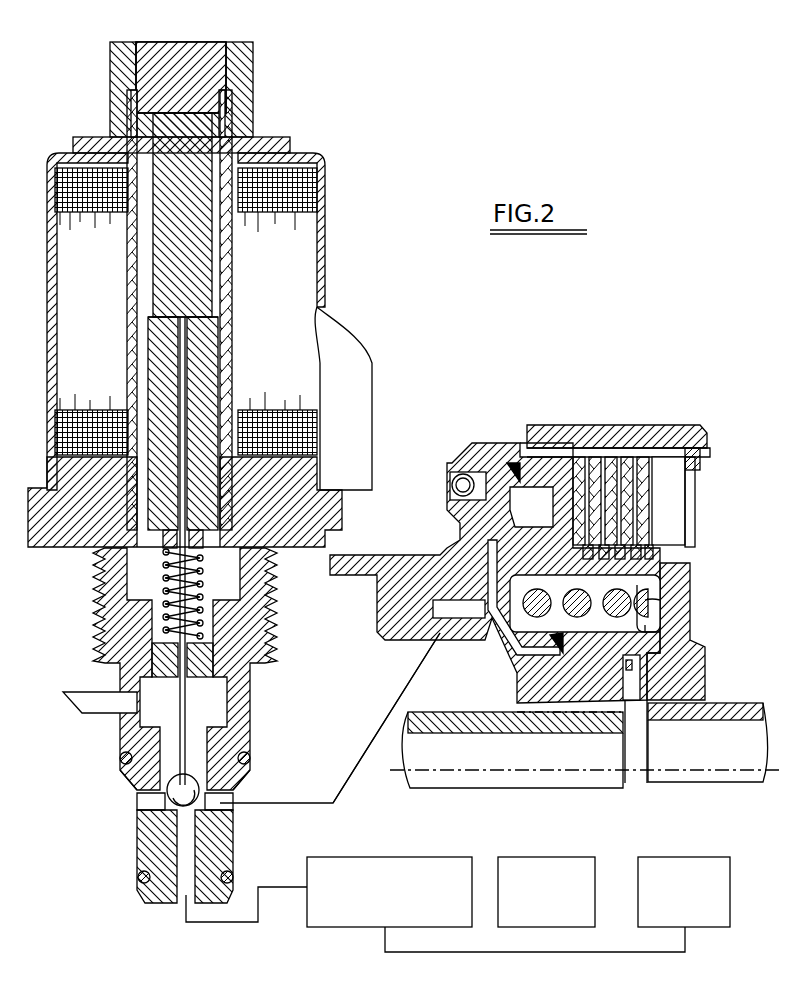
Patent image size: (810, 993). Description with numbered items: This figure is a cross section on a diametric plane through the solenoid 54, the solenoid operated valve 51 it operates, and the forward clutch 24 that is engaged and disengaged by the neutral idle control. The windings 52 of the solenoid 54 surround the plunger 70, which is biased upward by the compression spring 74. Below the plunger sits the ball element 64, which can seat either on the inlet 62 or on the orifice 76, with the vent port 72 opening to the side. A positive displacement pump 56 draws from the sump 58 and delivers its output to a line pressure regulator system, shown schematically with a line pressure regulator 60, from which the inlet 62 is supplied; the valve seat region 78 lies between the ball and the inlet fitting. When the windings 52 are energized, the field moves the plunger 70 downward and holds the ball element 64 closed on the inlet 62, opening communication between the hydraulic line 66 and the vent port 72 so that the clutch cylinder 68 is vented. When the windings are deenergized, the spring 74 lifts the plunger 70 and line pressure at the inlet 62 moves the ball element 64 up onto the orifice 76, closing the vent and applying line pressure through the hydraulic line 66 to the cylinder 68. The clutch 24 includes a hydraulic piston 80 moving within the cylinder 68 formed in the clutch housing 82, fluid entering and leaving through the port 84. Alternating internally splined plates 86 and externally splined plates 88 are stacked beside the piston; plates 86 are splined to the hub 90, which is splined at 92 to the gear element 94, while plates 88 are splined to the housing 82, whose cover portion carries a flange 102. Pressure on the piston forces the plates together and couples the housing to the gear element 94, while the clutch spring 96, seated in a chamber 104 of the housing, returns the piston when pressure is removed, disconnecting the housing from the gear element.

The forward clutch 24 is at (575, 412).
The solenoid operated valve 51 is at (115, 772).
The windings 52 is at (305, 193).
The solenoid 54 is at (283, 110).
The positive displacement pump 56 is at (546, 856).
The sump 58 is at (695, 856).
The line pressure regulator 60 is at (390, 856).
The inlet 62 is at (183, 838).
The ball element 64 is at (167, 800).
The hydraulic line 66 is at (383, 722).
The clutch cylinder 68 is at (470, 548).
The plunger 70 is at (182, 390).
The vent port 72 is at (93, 692).
The compression spring 74 is at (170, 567).
The orifice 76 is at (197, 767).
The valve seat 78 is at (220, 803).
The hydraulic piston 80 is at (515, 465).
The clutch housing 82 is at (668, 432).
The port 84 is at (440, 633).
The internally splined plates 86 is at (577, 457).
The externally splined plates 88 is at (618, 457).
The hub 90 is at (687, 637).
The spline 92 is at (707, 705).
The gear element 94 is at (700, 722).
The clutch spring 96 is at (532, 590).
The flange 102 is at (707, 445).
The chamber 104 is at (660, 603).